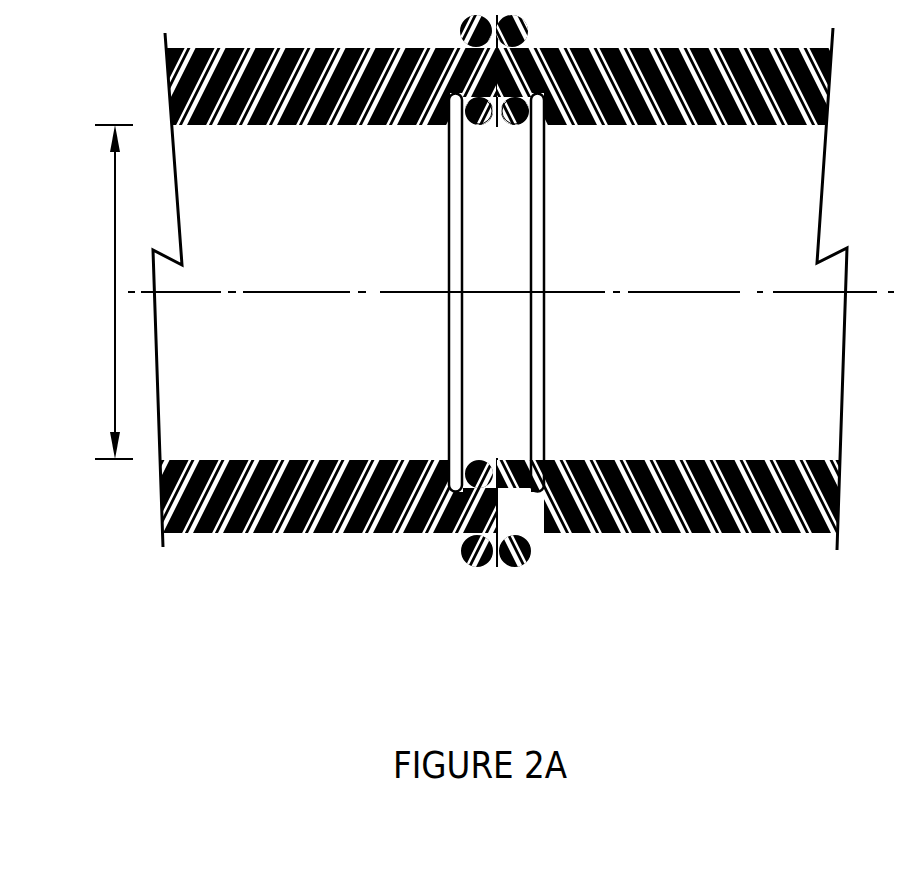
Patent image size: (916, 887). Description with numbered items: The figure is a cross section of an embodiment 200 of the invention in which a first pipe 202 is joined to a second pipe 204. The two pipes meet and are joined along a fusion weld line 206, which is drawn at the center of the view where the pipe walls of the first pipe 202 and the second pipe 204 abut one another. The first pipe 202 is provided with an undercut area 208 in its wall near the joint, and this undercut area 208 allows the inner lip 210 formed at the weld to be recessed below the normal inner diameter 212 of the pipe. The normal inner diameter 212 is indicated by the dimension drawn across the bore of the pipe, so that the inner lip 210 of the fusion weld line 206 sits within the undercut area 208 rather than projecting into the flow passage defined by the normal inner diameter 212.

The embodiment 200 is at (412, 648).
The first pipe 202 is at (187, 410).
The second pipe 204 is at (765, 418).
The fusion weld line 206 is at (497, 405).
The undercut area 208 is at (450, 138).
The inner lip 210 is at (474, 128).
The normal inner diameter 212 is at (112, 208).